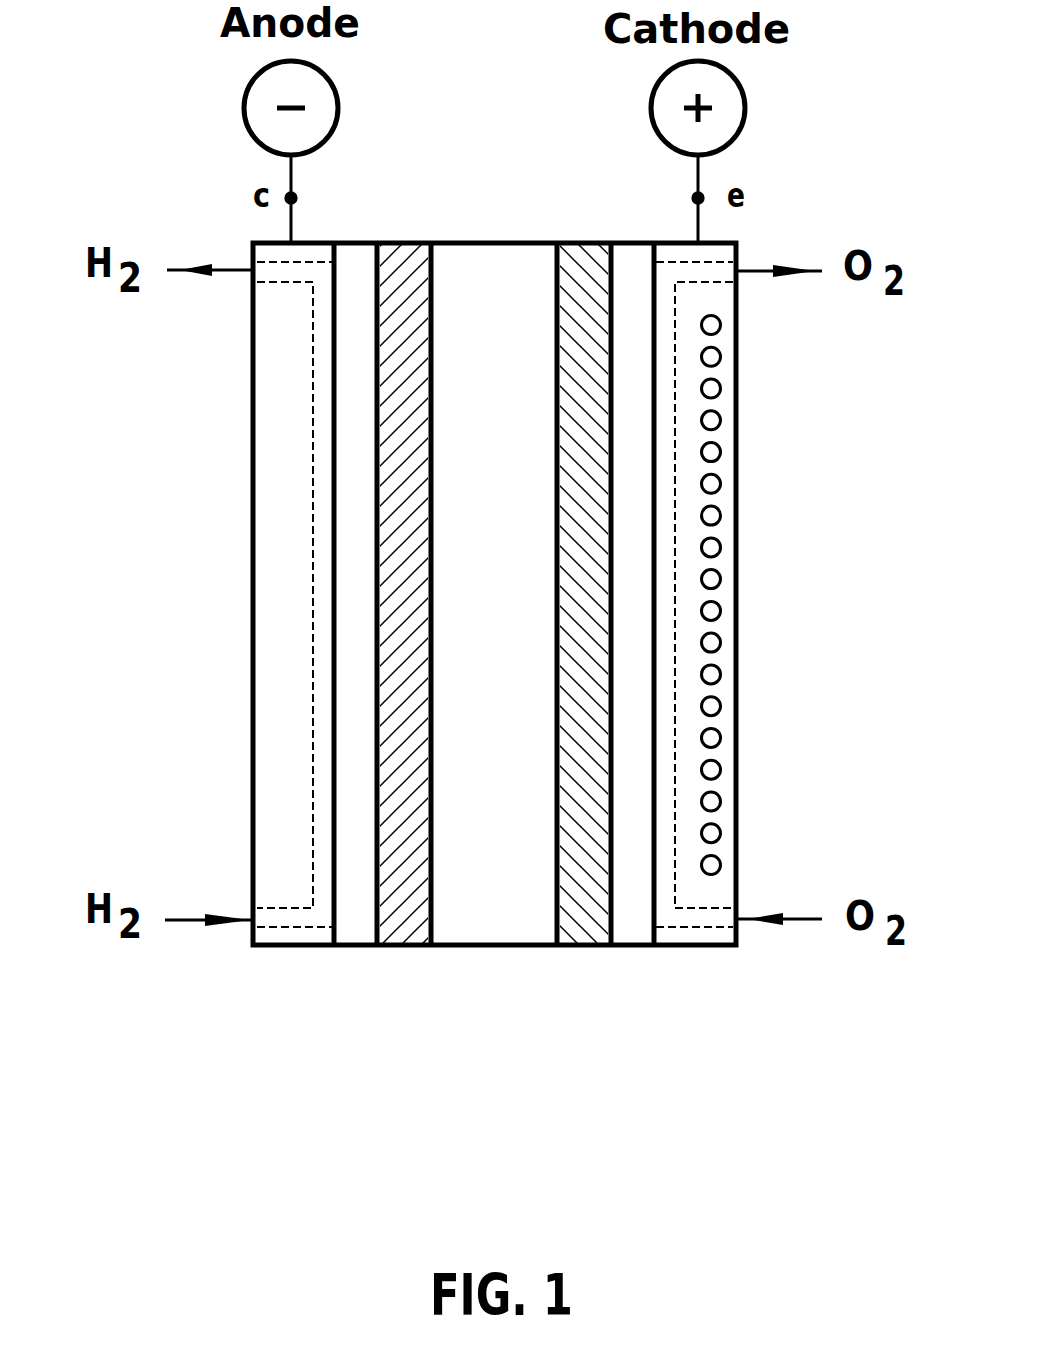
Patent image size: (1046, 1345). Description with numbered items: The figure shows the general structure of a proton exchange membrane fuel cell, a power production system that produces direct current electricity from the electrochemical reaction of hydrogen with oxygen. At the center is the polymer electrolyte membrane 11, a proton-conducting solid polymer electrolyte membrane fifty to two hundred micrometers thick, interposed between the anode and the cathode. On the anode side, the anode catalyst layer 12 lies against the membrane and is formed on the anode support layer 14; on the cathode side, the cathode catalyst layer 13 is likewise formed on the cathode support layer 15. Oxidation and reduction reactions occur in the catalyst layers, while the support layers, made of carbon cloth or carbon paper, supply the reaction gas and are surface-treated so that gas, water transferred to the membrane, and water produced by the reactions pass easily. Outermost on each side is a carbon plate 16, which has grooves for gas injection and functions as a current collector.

The polymer electrolyte membrane 11 is at (495, 918).
The anode catalyst layer 12 is at (402, 923).
The cathode catalyst layer 13 is at (592, 923).
The anode support layer 14 is at (355, 425).
The cathode support layer 15 is at (625, 433).
The carbon plate 16 is at (285, 577).